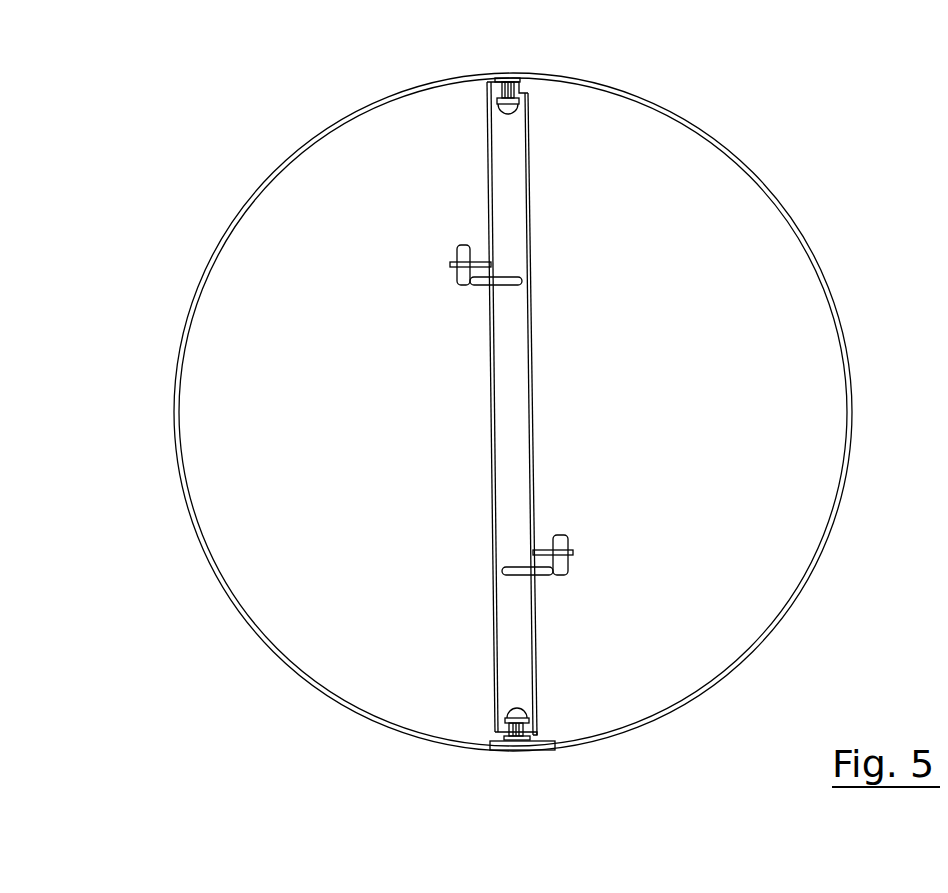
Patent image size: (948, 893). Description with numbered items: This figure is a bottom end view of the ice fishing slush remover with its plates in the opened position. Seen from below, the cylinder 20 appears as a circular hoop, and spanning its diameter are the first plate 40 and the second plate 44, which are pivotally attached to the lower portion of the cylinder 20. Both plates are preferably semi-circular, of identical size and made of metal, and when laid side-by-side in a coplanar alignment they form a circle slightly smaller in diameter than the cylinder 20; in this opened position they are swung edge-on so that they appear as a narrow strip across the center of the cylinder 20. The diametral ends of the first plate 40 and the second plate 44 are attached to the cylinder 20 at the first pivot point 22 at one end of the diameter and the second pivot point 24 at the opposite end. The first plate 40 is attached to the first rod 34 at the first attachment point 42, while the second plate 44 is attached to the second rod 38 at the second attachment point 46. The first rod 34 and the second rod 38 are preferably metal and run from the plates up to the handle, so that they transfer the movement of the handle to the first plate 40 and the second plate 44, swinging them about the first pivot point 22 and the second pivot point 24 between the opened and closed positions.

The cylinder 20 is at (290, 667).
The first pivot point 22 is at (515, 82).
The second pivot point 24 is at (513, 740).
The first rod 34 is at (560, 533).
The second rod 38 is at (461, 243).
The first plate 40 is at (530, 320).
The first attachment point 42 is at (573, 550).
The second plate 44 is at (492, 435).
The second attachment point 46 is at (450, 263).